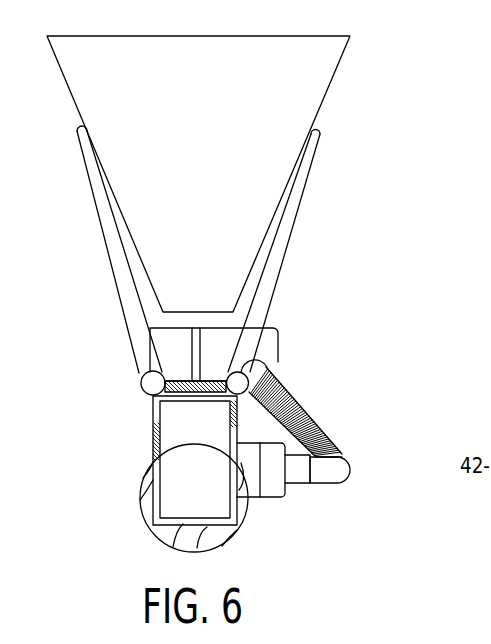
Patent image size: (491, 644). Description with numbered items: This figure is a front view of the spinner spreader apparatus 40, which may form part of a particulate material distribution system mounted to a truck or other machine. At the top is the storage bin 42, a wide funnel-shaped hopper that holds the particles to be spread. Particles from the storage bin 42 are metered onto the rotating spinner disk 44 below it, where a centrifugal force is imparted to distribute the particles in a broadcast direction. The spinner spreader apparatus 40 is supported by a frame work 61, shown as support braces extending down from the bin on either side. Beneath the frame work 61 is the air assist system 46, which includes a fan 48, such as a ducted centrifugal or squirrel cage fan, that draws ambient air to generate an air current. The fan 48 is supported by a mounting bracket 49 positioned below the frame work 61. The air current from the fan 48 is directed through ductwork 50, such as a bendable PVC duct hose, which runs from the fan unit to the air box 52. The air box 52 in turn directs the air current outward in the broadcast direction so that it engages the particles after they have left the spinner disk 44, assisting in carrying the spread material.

The spinner spreader apparatus 40 is at (368, 77).
The storage bin 42 is at (158, 42).
The spinner disk 44 is at (217, 326).
The air assist system 46 is at (138, 436).
The fan 48 is at (162, 536).
The mounting bracket 49 is at (168, 474).
The ductwork 50 is at (305, 397).
The air box 52 is at (168, 346).
The frame work 61 is at (107, 213).